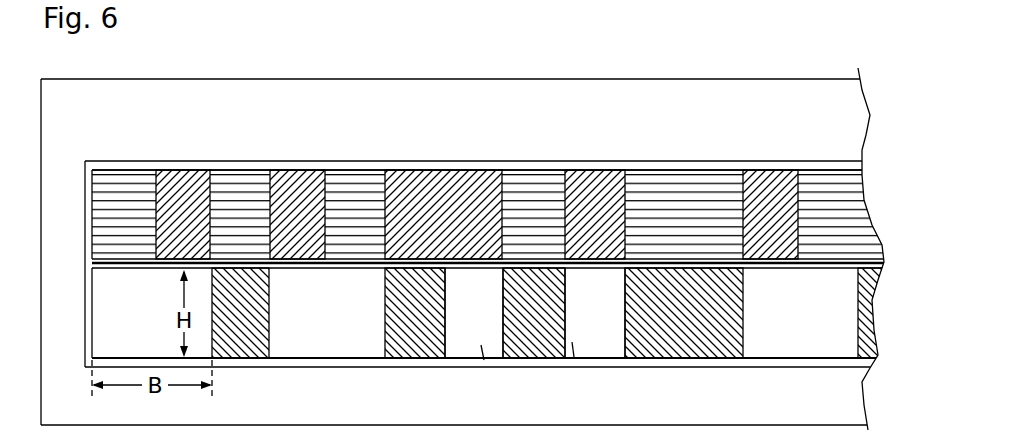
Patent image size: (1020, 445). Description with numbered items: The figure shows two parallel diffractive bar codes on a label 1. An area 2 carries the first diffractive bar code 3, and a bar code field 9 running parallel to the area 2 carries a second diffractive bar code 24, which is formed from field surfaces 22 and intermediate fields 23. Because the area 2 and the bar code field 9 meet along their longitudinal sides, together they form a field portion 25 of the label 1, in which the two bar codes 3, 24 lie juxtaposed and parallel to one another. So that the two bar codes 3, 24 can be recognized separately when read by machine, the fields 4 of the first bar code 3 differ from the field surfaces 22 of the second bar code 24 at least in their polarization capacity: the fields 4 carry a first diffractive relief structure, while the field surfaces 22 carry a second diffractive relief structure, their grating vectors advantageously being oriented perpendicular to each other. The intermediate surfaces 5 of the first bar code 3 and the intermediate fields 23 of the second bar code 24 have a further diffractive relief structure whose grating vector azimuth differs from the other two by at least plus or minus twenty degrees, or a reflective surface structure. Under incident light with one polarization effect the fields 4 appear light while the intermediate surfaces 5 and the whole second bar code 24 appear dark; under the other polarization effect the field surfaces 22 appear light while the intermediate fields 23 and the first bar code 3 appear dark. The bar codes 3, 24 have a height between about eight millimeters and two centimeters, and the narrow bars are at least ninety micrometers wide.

The label 1 is at (385, 127).
The area 2 is at (477, 235).
The first diffractive bar code 3 is at (187, 160).
The fields 4 is at (332, 163).
The intermediate surfaces 5 is at (587, 168).
The bar code field 9 is at (481, 344).
The field surfaces 22 is at (571, 372).
The intermediate fields 23 is at (263, 315).
The second diffractive bar code 24 is at (303, 363).
The field portion 25 is at (502, 372).